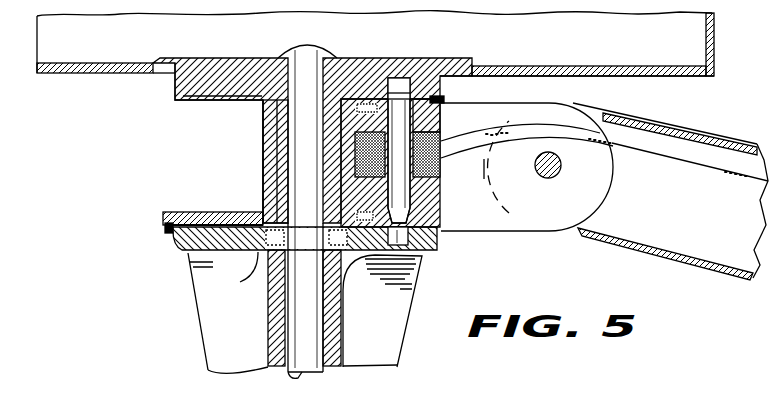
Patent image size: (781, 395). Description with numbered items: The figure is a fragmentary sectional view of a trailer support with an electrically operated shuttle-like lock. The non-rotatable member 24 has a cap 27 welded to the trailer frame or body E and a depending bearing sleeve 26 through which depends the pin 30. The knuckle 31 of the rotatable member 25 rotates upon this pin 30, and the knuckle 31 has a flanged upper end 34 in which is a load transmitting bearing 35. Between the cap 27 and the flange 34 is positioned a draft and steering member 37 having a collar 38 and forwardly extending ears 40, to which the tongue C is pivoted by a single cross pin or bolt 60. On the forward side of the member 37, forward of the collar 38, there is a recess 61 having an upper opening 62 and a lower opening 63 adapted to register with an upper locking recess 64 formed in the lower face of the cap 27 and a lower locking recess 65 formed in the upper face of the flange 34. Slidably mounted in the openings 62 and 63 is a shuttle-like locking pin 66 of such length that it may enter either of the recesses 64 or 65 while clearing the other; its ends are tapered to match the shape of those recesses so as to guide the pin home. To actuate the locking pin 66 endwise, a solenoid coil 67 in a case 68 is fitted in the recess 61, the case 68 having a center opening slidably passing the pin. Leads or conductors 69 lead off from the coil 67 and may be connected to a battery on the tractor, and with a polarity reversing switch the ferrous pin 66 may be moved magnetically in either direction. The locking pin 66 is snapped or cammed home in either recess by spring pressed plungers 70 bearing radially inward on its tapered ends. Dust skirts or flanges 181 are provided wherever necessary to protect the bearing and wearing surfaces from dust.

The trailer frame or body E is at (50, 27).
The cap 27 is at (228, 58).
The non-rotatable member 24 is at (175, 88).
The bearing sleeve 26 is at (277, 133).
The collar 38 is at (264, 169).
The draft and steering member 37 is at (164, 216).
The dust skirts or flanges 181 is at (168, 234).
The flanged upper end 34 is at (182, 254).
The load transmitting bearing 35 is at (256, 268).
The rotatable member 25 is at (207, 340).
The knuckle 31 is at (343, 348).
The lower opening 63 is at (441, 193).
The upper opening 62 is at (445, 118).
The shuttle-like locking pin 66 is at (384, 160).
The spring pressed plungers 70 is at (374, 97).
The upper locking recess 64 is at (407, 78).
The lower locking recess 65 is at (396, 246).
The solenoid coil 67 is at (327, 173).
The pin 30 is at (303, 374).
The forwardly extending ears 40 is at (505, 233).
The leads or conductors 69 is at (526, 128).
The case 68 is at (460, 170).
The cross pin or bolt 60 is at (558, 172).
The recess 61 is at (456, 133).
The tongue C is at (728, 143).